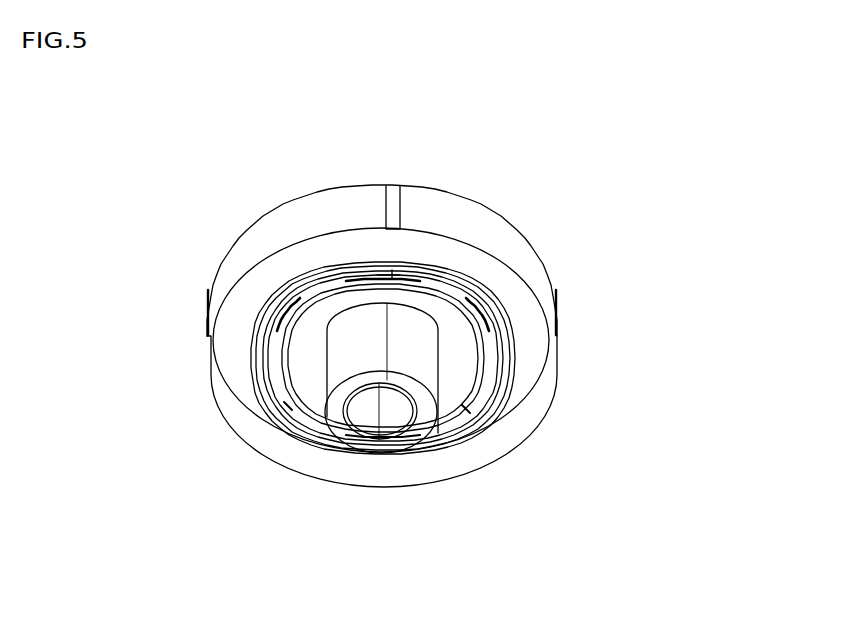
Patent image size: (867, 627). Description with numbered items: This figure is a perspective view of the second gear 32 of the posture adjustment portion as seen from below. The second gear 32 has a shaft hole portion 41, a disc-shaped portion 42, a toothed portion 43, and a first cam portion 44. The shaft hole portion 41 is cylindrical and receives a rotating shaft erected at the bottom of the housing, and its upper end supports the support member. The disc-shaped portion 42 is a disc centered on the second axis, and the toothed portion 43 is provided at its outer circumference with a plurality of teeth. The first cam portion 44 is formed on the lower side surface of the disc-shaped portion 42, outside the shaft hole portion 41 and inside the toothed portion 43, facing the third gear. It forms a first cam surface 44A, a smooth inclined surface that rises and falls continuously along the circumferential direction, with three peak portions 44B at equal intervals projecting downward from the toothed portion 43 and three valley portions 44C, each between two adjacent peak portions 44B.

The second gear 32 is at (261, 171).
The shaft hole portion 41 is at (345, 442).
The disc-shaped portion 42 is at (318, 372).
The toothed portion 43 is at (455, 215).
The first cam portion 44 is at (256, 351).
The first cam surface 44A is at (488, 354).
The peak portions 44B is at (300, 300).
The valley portions 44C is at (389, 276).